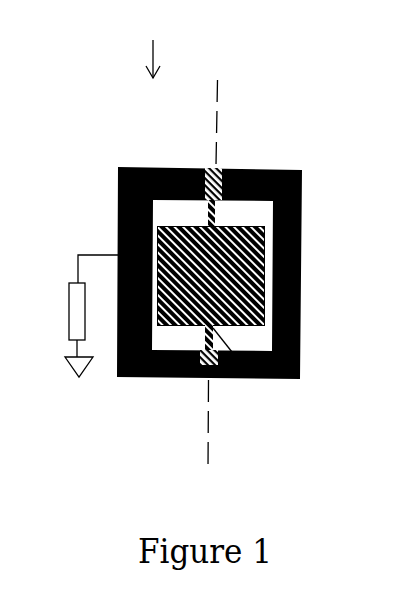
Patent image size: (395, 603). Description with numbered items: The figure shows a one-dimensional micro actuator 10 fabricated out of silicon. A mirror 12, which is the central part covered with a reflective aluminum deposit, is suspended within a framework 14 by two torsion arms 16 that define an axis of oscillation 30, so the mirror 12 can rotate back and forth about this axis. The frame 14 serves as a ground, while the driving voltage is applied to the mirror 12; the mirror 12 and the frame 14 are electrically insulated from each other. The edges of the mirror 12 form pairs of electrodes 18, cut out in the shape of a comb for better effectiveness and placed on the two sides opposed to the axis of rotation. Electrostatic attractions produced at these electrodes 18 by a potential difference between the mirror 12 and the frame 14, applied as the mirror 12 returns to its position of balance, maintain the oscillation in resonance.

The micro actuator 10 is at (177, 42).
The mirror 12 is at (250, 227).
The framework 14 is at (252, 170).
The torsion arms 16 is at (268, 378).
The electrodes 18 is at (262, 273).
The axis of oscillation 30 is at (217, 115).